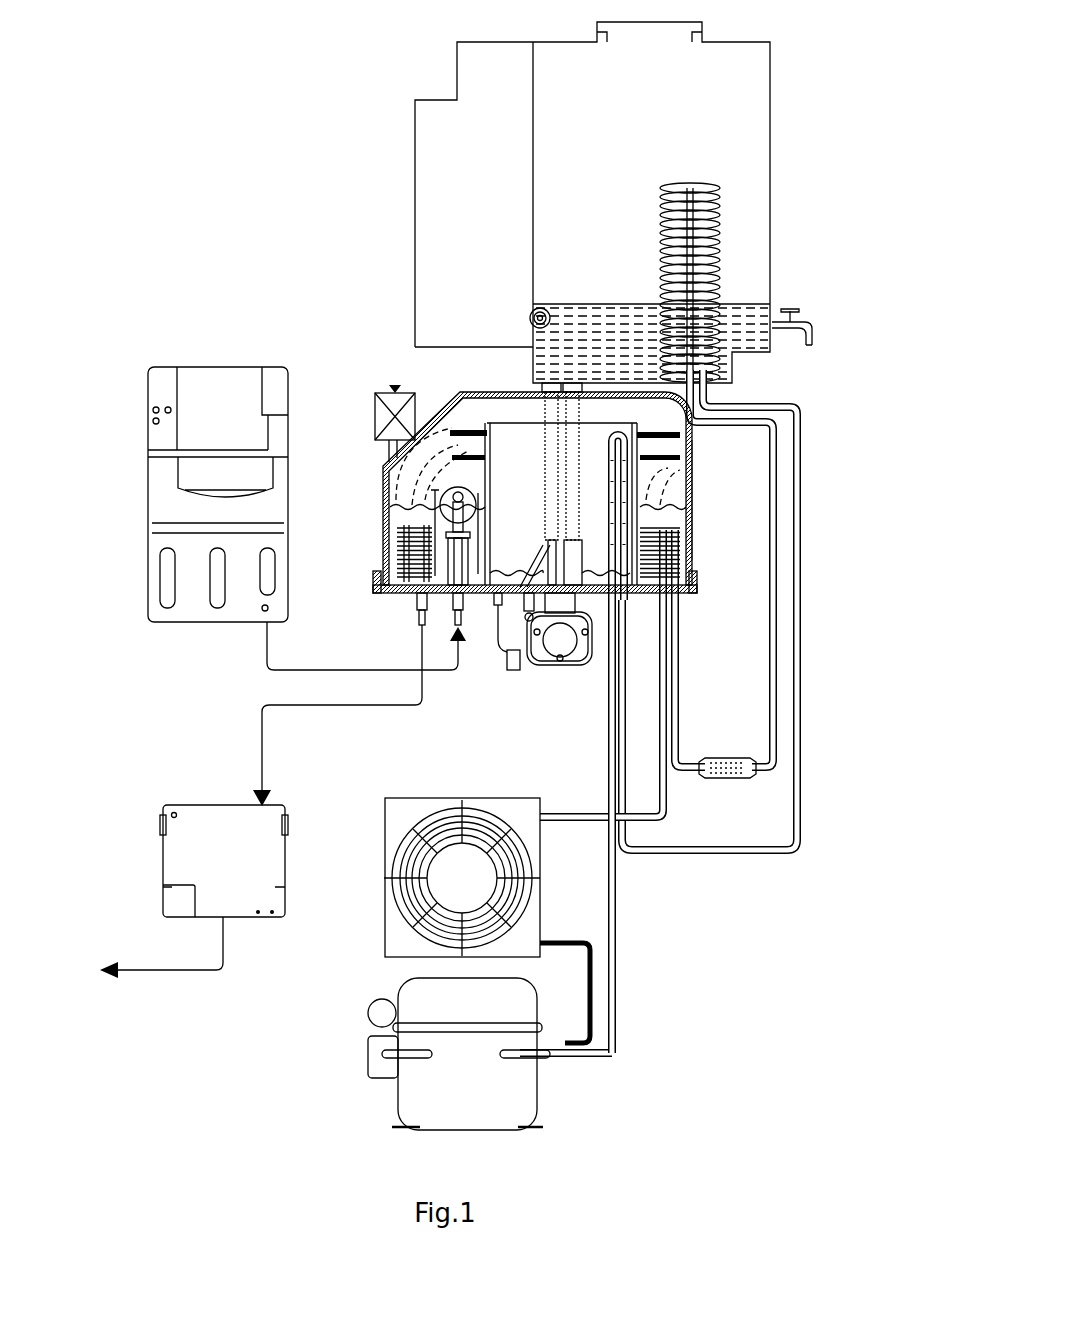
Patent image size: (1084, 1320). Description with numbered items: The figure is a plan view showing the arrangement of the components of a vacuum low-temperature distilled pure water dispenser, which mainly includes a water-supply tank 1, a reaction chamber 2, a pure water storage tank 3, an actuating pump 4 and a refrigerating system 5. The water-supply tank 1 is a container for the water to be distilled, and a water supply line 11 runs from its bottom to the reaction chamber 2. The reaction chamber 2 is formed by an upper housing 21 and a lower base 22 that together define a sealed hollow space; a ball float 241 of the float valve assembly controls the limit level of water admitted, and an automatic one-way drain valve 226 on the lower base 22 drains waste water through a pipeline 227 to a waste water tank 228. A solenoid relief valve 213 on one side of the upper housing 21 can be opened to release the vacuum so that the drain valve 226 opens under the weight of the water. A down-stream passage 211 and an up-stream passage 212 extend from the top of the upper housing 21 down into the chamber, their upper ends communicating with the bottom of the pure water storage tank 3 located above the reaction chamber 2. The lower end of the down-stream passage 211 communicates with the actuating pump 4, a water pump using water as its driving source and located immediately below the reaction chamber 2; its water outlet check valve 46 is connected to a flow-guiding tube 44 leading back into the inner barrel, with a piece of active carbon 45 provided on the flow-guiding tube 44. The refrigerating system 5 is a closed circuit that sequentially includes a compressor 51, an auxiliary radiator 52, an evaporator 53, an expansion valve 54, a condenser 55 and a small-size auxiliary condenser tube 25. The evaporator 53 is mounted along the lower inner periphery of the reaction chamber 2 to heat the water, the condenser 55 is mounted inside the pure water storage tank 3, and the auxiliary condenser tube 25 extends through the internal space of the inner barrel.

The water-supply tank 1 is at (222, 378).
The water supply line 11 is at (265, 648).
The reaction chamber 2 is at (372, 523).
The upper housing 21 is at (690, 447).
The down-stream passage 211 is at (700, 399).
The up-stream passage 212 is at (540, 385).
The solenoid relief valve 213 is at (392, 386).
The lower base 22 is at (700, 592).
The automatic one-way drain valve 226 is at (415, 605).
The pipeline 227 is at (345, 707).
The waste water tank 228 is at (200, 815).
The ball float 241 is at (445, 500).
The small-size auxiliary condenser tube 25 is at (628, 497).
The pure water storage tank 3 is at (450, 189).
The actuating pump 4 is at (585, 667).
The flow-guiding tube 44 is at (500, 645).
The active carbon 45 is at (514, 671).
The water outlet check valve 46 is at (530, 656).
The refrigerating system 5 is at (360, 976).
The compressor 51 is at (518, 1097).
The auxiliary radiator 52 is at (418, 805).
The evaporator 53 is at (665, 537).
The expansion valve 54 is at (727, 779).
The condenser 55 is at (722, 232).